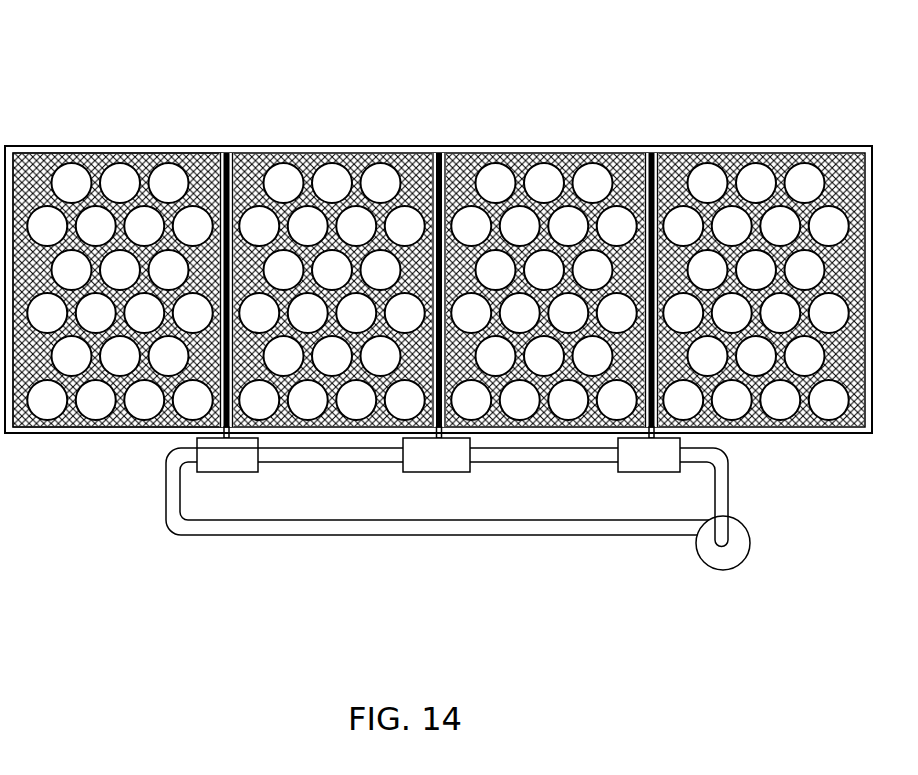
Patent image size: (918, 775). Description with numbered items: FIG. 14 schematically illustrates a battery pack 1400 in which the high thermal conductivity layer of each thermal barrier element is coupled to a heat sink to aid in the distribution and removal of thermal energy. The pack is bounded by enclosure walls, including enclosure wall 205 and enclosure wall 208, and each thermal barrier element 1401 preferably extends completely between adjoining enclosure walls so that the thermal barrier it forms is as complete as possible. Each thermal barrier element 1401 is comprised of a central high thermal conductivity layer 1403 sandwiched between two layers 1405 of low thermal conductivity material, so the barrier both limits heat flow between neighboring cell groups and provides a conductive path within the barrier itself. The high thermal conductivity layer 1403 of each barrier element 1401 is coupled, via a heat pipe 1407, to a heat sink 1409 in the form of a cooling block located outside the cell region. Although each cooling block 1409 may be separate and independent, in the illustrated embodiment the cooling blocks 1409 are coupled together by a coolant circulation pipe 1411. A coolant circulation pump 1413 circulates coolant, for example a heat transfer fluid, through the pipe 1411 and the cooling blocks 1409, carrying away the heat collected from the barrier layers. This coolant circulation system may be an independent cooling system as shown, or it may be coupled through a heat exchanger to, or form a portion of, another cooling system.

The battery pack 1400 is at (710, 60).
The enclosure wall 205 is at (748, 150).
The enclosure wall 208 is at (38, 165).
The thermal barrier element 1401 is at (458, 202).
The high thermal conductivity layer 1403 is at (430, 212).
The low thermal conductivity layer 1405 is at (433, 207).
The heat pipe 1407 is at (695, 433).
The heat sink 1409 is at (252, 466).
The coolant circulation pipe 1411 is at (435, 528).
The coolant circulation pump 1413 is at (732, 567).